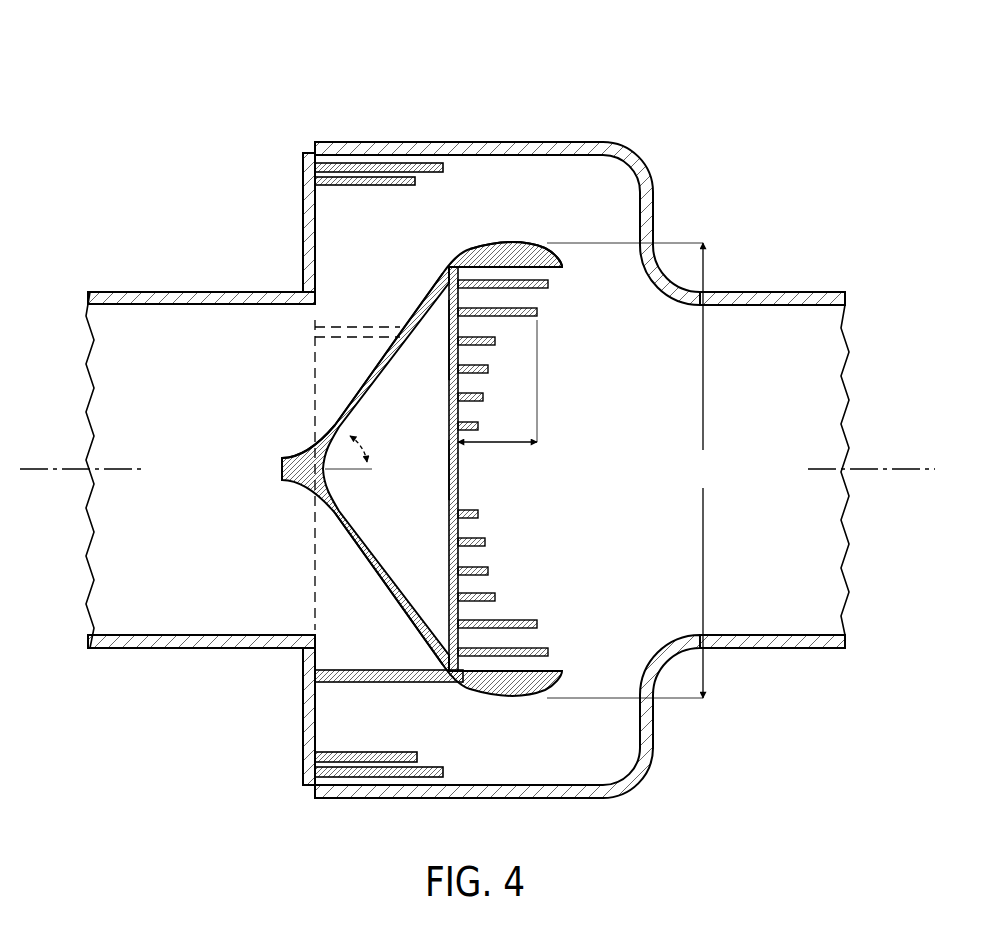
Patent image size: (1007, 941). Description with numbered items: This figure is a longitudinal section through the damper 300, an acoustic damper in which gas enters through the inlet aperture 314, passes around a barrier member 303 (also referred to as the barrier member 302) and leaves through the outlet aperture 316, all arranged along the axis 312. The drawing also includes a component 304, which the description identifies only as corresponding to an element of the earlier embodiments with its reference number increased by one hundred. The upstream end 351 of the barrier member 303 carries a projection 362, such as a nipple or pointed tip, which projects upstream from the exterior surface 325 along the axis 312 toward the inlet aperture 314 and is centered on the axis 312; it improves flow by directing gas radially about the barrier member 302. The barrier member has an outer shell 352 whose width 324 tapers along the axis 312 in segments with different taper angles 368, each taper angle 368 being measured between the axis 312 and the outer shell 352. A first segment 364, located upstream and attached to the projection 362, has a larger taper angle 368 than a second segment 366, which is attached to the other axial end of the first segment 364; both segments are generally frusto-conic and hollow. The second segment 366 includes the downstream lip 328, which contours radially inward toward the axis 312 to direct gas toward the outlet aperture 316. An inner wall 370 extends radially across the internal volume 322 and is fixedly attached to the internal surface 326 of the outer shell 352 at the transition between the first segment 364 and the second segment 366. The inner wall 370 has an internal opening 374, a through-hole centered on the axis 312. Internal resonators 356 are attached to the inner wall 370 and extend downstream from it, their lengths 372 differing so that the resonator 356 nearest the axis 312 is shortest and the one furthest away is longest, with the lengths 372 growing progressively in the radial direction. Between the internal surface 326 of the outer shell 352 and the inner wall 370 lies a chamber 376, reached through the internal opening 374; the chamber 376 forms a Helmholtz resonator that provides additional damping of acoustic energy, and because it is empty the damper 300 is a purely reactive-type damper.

The damper 300 is at (185, 100).
The barrier member 302 is at (442, 275).
The barrier member 303 is at (333, 423).
The housing 304 is at (300, 232).
The axis 312 is at (876, 469).
The inlet aperture 314 is at (130, 380).
The outlet aperture 316 is at (800, 350).
The internal volume 322 is at (550, 469).
The width 324 is at (636, 470).
The exterior surface 325 is at (385, 590).
The internal surface 326 is at (370, 530).
The downstream lip 328 is at (565, 262).
The upstream end 351 is at (282, 482).
The outer shell 352 is at (368, 382).
The internal resonators 356 is at (480, 514).
The projection 362 is at (285, 462).
The first segment 364 is at (425, 310).
The second segment 366 is at (492, 250).
The taper angle 368 is at (370, 447).
The inner wall 370 is at (455, 338).
The lengths 372 is at (537, 448).
The internal opening 374 is at (456, 508).
The chamber 376 is at (445, 484).